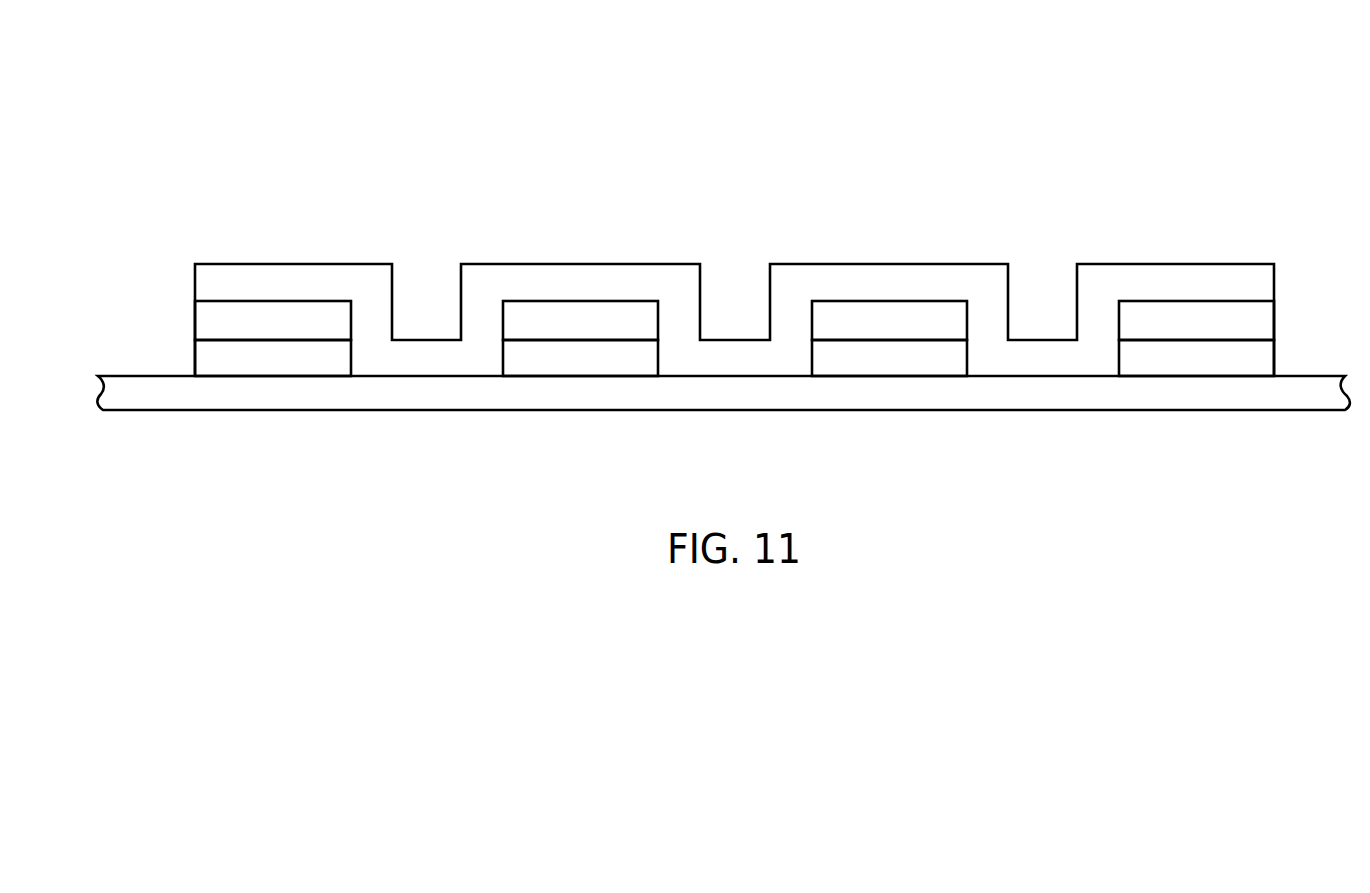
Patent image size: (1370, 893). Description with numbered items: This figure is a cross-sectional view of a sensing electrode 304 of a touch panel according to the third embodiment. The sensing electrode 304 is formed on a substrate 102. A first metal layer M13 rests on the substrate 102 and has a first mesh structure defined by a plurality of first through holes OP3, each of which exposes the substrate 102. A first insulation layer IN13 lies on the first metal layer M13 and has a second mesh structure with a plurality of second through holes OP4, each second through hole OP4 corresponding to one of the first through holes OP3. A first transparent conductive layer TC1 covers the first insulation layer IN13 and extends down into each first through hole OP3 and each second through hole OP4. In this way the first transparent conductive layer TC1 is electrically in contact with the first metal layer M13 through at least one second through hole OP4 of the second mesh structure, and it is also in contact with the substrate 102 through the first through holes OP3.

The sensing electrode 304 is at (723, 225).
The substrate 102 is at (722, 404).
The first metal layer M13 is at (253, 370).
The first insulation layer IN13 is at (253, 328).
The first transparent conductive layer TC1 is at (720, 366).
The first through hole OP3 is at (430, 364).
The second through hole OP4 is at (433, 275).